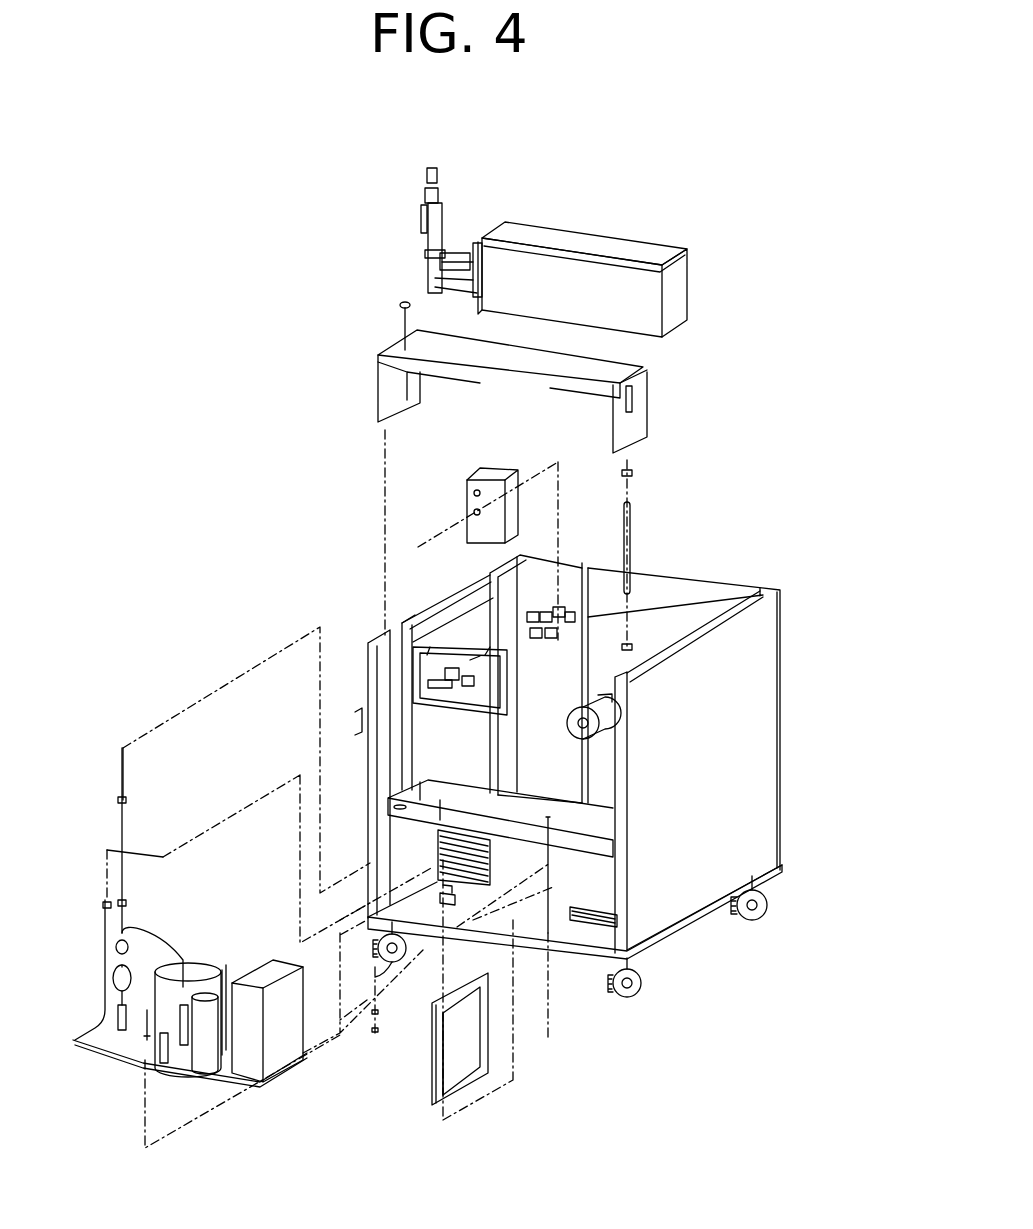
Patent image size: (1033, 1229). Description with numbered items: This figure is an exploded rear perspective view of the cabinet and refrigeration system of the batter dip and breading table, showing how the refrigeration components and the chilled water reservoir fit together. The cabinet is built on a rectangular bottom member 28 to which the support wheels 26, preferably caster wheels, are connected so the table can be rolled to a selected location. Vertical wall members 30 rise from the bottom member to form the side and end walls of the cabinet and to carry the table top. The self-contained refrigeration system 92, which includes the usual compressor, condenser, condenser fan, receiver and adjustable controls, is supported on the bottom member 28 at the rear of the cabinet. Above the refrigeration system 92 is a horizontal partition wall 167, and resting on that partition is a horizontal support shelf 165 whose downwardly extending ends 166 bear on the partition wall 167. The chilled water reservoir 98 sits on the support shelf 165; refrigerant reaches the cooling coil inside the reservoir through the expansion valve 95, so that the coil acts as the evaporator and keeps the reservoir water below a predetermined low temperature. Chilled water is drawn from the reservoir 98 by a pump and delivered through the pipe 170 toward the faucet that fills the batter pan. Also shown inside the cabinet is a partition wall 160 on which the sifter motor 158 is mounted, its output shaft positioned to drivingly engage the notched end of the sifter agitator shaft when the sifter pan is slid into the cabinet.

The support wheels 26 is at (765, 910).
The bottom member 28 is at (687, 928).
The vertical wall members 30 is at (612, 762).
The refrigeration system 92 is at (140, 1055).
The expansion valve 95 is at (427, 263).
The chilled water reservoir 98 is at (630, 297).
The sifter motor 158 is at (588, 724).
The partition wall 160 is at (655, 640).
The horizontal support shelf 165 is at (513, 360).
The downwardly extending ends 166 is at (633, 420).
The horizontal partition wall 167 is at (587, 830).
The pipe 170 is at (623, 537).